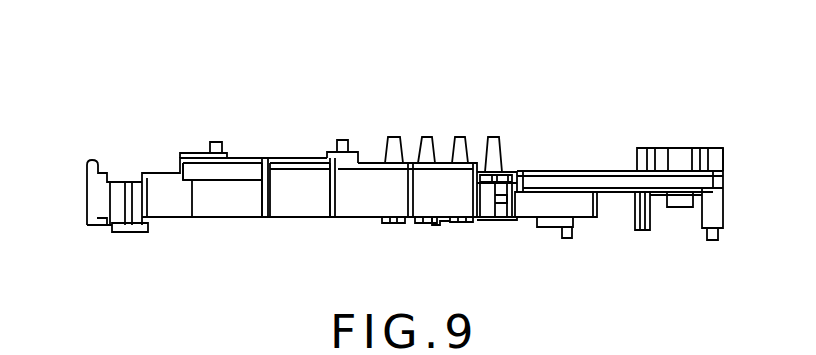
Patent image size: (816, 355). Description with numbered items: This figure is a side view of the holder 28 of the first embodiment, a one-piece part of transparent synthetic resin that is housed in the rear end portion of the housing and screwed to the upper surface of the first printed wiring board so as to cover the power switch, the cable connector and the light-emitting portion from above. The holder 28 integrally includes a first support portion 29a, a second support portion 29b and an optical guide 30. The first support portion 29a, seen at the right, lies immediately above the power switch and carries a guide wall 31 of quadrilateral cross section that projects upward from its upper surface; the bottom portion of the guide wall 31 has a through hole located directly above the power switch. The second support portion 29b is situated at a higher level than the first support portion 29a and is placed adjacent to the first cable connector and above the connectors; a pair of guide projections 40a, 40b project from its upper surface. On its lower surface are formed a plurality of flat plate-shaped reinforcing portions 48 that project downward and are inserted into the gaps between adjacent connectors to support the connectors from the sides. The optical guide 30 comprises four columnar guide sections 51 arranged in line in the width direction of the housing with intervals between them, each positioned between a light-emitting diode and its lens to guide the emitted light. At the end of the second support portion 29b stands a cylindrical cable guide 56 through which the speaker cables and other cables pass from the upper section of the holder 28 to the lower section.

The holder 28 is at (157, 173).
The first support portion 29a is at (613, 168).
The second support portion 29b is at (287, 157).
The optical guide 30 is at (509, 144).
The guide wall 31 is at (712, 158).
The guide projection 40a is at (343, 140).
The guide projection 40b is at (215, 142).
The reinforcing portions 48 is at (270, 203).
The guide sections 51 is at (423, 137).
The cable guide 56 is at (122, 175).